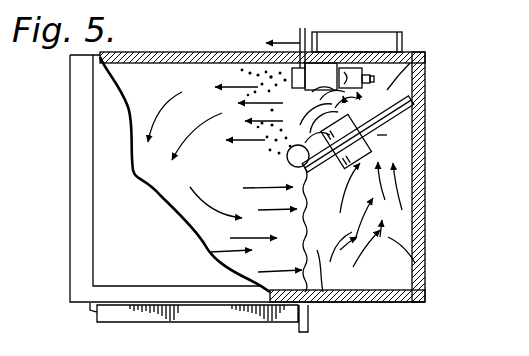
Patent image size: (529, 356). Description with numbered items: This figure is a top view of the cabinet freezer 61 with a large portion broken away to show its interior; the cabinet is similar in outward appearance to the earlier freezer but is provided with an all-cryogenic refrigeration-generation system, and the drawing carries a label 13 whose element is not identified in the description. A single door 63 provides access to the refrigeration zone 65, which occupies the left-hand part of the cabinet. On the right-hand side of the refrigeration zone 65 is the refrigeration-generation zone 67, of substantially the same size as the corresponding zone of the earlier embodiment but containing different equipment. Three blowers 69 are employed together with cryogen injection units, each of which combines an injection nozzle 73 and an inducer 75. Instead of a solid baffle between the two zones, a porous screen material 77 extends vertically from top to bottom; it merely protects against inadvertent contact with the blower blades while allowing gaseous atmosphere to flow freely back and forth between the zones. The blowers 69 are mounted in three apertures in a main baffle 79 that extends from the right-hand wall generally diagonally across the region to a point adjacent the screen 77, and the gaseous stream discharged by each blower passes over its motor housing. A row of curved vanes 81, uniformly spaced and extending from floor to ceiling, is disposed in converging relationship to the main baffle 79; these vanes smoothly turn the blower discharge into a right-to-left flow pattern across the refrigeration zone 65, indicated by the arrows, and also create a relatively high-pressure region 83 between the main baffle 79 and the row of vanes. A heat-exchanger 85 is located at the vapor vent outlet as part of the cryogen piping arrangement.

The washing apparatus 13 is at (236, 153).
The cabinet freezer 61 is at (68, 154).
The door 63 is at (138, 302).
The refrigeration zone 65 is at (213, 173).
The refrigeration-generation zone 67 is at (425, 281).
The blowers 69 is at (383, 125).
The injection nozzle 73 is at (378, 53).
The inducer 75 is at (310, 47).
The porous screen material 77 is at (309, 308).
The main baffle 79 is at (421, 90).
The curved vanes 81 is at (300, 112).
The high-pressure region 83 is at (402, 38).
The heat-exchanger 85 is at (352, 20).